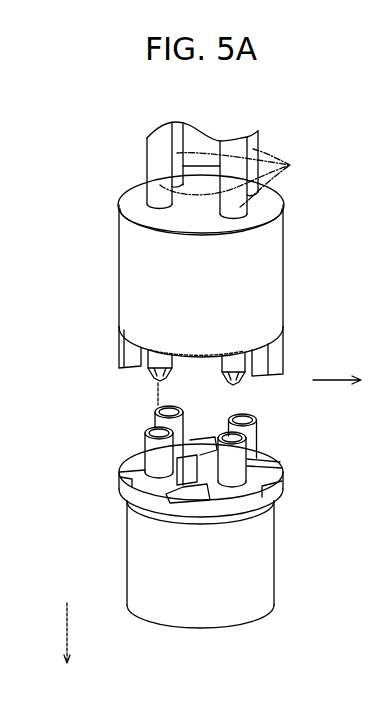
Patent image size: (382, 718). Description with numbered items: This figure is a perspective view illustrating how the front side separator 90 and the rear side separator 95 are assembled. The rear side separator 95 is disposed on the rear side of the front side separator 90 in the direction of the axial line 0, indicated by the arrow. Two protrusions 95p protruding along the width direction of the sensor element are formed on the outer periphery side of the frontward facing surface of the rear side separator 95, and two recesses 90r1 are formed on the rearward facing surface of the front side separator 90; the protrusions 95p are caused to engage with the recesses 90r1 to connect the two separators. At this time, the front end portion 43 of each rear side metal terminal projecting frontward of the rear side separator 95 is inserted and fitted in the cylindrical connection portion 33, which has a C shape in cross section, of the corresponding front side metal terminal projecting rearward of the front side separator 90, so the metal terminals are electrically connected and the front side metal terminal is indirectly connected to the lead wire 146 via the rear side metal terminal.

The rear side separator 95 is at (138, 268).
The protrusions 95p is at (136, 349).
The front end portion 43 is at (170, 370).
The lead wire 146 is at (290, 165).
The front side separator 90 is at (132, 560).
The recesses 90r1 is at (123, 467).
The connection portion 33 is at (140, 437).
The axial line 0 is at (66, 650).